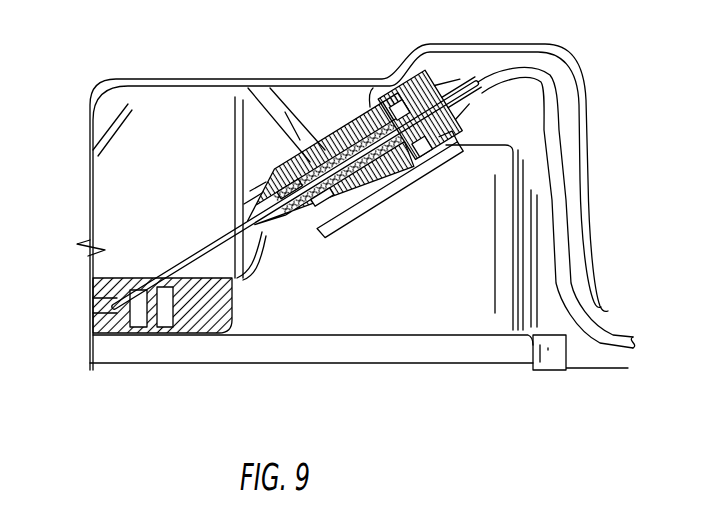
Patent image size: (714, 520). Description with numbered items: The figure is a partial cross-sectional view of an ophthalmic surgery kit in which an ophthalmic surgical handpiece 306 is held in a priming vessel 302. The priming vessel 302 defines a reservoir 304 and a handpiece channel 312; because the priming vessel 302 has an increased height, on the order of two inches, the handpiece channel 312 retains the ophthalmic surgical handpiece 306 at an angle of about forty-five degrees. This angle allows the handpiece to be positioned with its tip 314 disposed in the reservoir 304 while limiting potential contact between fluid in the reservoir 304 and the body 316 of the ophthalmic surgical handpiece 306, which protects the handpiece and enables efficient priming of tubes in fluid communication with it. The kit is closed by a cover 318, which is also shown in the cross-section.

The priming vessel 302 is at (441, 352).
The reservoir 304 is at (107, 262).
The ophthalmic surgical handpiece 306 is at (339, 133).
The handpiece channel 312 is at (365, 200).
The tip 314 is at (172, 342).
The body 316 is at (301, 216).
The cover 318 is at (590, 180).